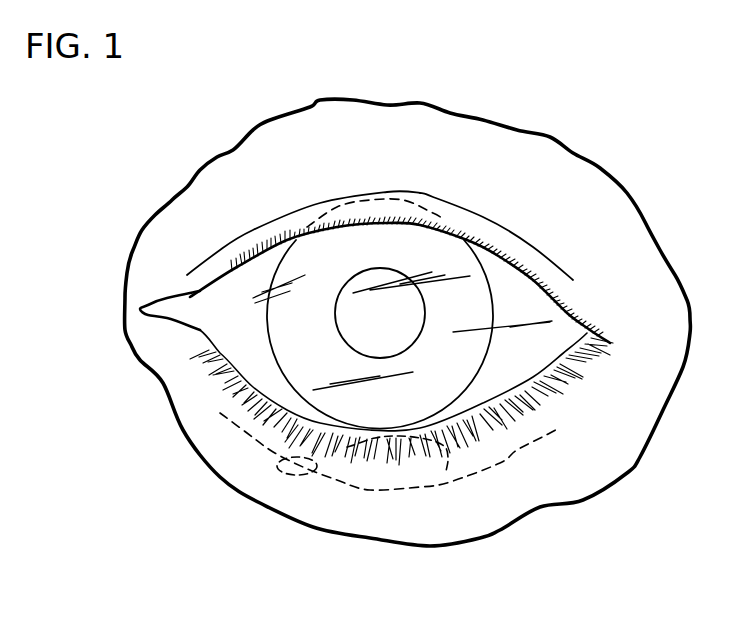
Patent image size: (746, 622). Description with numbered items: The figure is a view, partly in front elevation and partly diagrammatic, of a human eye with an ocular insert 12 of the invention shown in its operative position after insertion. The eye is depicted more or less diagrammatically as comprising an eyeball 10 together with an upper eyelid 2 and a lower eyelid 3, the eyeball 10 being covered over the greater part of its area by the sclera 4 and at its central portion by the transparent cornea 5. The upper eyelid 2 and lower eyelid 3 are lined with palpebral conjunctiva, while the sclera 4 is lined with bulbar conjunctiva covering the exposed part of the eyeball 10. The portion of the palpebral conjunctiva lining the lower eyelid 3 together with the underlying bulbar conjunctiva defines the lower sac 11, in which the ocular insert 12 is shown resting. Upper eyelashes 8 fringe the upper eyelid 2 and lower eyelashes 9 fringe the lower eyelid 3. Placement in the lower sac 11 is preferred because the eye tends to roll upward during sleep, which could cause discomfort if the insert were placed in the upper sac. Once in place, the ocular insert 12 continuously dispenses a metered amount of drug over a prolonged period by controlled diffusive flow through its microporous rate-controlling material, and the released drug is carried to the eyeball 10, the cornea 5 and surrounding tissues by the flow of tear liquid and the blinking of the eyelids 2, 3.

The upper eyelid 2 is at (430, 207).
The upper eyelashes 8 is at (503, 259).
The cornea 5 is at (300, 369).
The eyeball 10 is at (314, 385).
The sclera 4 is at (533, 350).
The lower eyelashes 9 is at (542, 418).
The lower eyelid 3 is at (496, 408).
The ocular insert 12 is at (447, 482).
The lower sac 11 is at (287, 462).